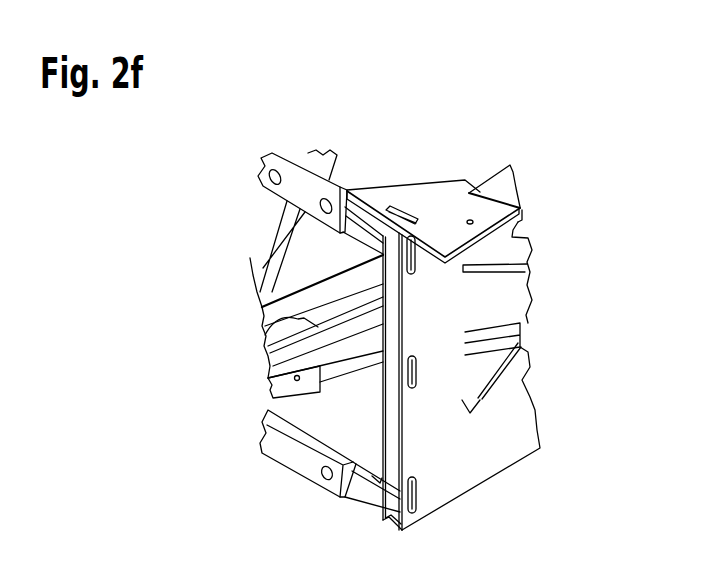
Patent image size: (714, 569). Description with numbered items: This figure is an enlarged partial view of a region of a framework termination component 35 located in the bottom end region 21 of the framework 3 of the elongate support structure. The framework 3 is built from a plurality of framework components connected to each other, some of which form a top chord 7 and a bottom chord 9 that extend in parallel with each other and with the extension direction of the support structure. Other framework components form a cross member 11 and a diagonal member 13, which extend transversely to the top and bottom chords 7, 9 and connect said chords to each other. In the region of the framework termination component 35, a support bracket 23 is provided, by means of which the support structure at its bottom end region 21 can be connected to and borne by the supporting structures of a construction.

The framework 3 is at (582, 312).
The top chord 7 is at (342, 188).
The support bracket 23 is at (440, 227).
The cross member 11 is at (265, 340).
The diagonal member 13 is at (312, 399).
The bottom chord 9 is at (288, 457).
The framework termination component 35 is at (490, 462).
The bottom end region 21 is at (240, 462).